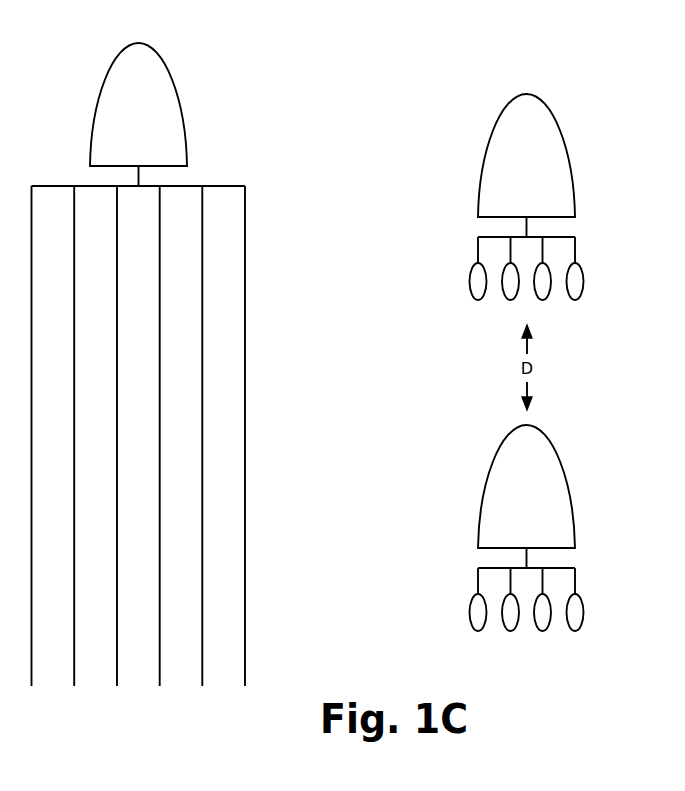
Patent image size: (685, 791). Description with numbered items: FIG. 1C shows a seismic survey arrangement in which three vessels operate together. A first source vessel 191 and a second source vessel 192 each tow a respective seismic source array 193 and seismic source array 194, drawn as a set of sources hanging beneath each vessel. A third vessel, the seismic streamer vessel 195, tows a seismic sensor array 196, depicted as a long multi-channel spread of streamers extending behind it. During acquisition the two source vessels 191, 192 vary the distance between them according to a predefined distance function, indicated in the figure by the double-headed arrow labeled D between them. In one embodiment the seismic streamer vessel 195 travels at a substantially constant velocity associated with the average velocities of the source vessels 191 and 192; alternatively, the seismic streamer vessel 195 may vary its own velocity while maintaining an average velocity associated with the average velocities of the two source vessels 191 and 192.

The first source vessel 191 is at (543, 117).
The second source vessel 192 is at (543, 448).
The seismic source array 193 is at (595, 263).
The seismic source array 194 is at (595, 597).
The seismic streamer vessel 195 is at (155, 67).
The seismic sensor array 196 is at (273, 280).